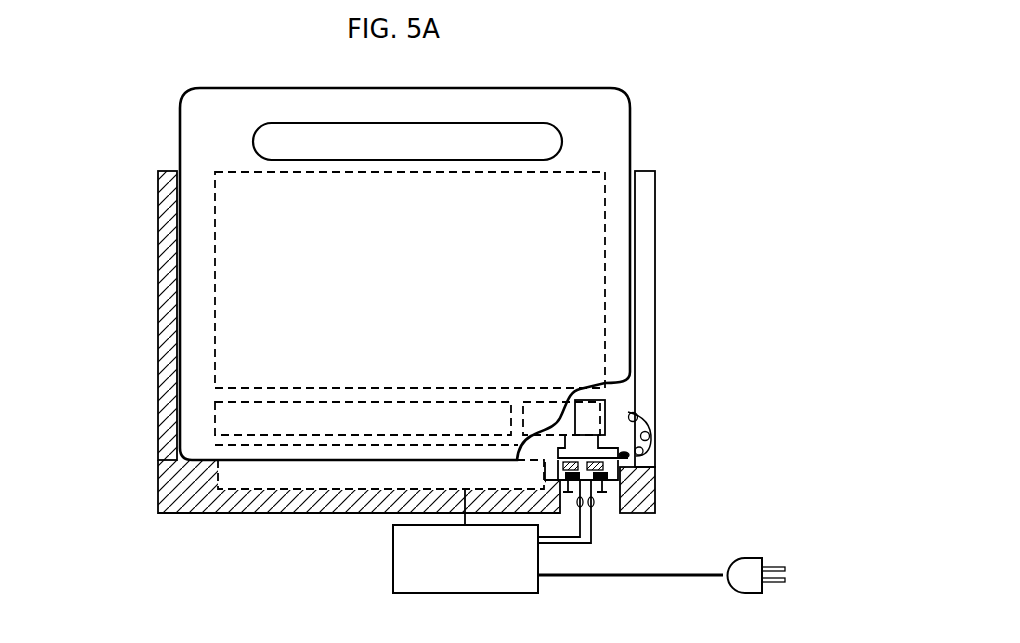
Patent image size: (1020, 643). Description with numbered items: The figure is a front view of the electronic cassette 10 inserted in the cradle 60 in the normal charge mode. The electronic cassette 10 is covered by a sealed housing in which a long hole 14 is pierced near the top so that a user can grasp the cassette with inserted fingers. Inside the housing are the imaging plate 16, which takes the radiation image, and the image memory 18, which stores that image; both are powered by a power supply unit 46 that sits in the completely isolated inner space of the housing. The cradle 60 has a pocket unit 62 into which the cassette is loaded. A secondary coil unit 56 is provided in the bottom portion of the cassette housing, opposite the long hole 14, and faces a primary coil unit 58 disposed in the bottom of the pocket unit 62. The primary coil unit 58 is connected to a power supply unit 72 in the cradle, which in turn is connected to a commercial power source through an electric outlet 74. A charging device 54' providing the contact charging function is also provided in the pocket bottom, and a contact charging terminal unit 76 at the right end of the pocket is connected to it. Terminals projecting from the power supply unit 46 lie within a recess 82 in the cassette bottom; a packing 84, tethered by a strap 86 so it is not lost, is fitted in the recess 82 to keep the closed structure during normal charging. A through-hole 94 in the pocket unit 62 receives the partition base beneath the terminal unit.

The electronic cassette 10 is at (175, 100).
The long hole 14 is at (455, 129).
The imaging plate 16 is at (215, 333).
The image memory 18 is at (215, 420).
The power supply unit 46 is at (597, 415).
The charging device 54' is at (630, 584).
The secondary coil unit 56 is at (245, 452).
The primary coil unit 58 is at (265, 478).
The cradle 60 is at (365, 342).
The pocket unit 62 is at (163, 270).
The power supply unit 72 is at (393, 557).
The electric outlet 74 is at (745, 558).
The contact charging terminal unit 76 is at (606, 511).
The recess 82 is at (584, 442).
The packing 84 is at (590, 438).
The strap 86 is at (649, 423).
The through-hole 94 is at (563, 508).